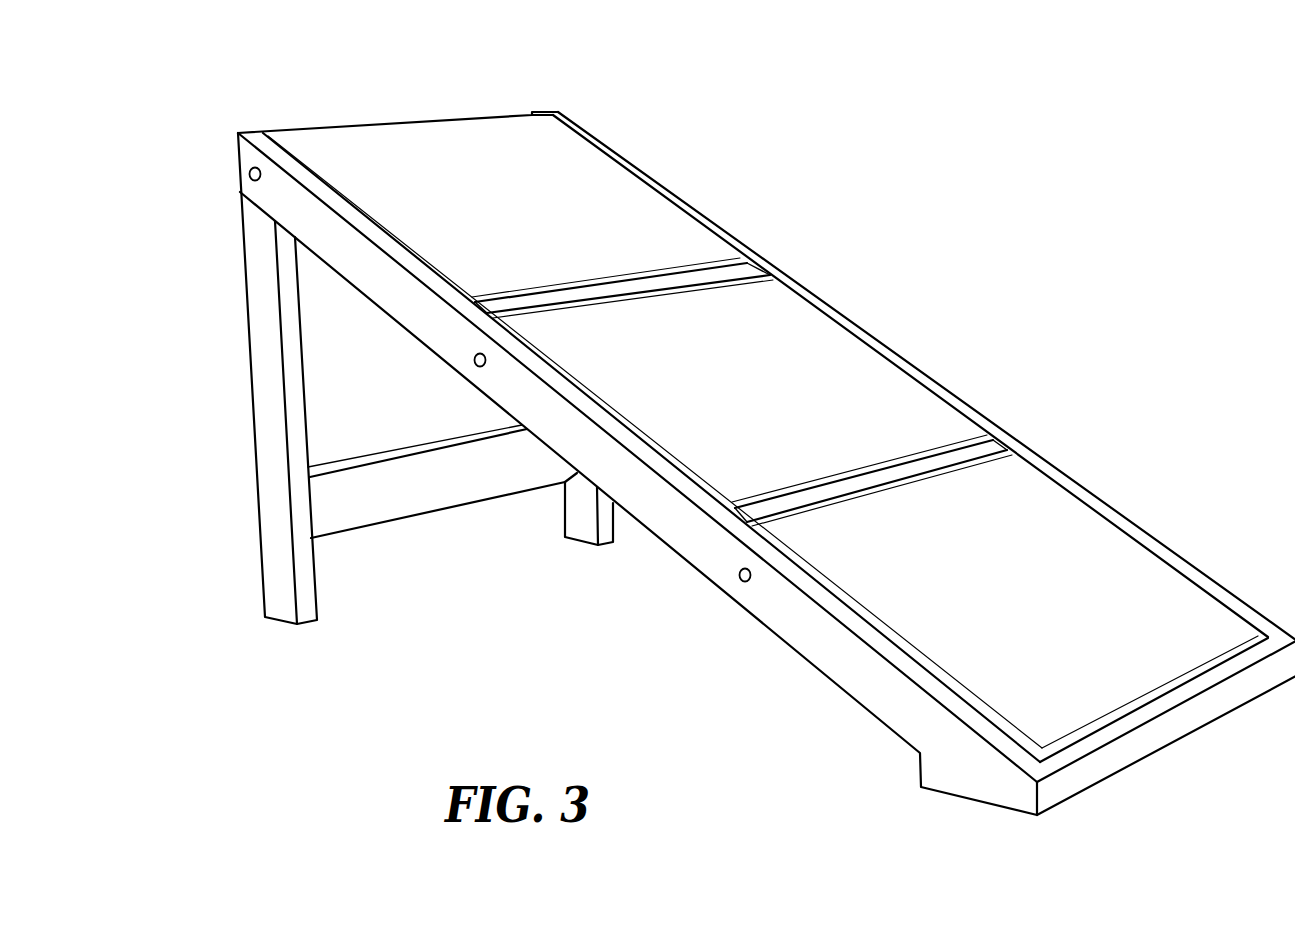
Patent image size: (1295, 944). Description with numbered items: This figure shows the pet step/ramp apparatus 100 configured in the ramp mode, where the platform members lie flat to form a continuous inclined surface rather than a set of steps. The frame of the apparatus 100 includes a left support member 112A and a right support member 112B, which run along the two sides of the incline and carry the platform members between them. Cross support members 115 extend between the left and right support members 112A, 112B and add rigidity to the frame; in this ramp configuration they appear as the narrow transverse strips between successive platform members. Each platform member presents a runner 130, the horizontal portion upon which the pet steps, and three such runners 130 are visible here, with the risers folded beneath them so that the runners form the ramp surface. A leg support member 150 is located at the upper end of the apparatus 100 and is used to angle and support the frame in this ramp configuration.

The pet step/ramp apparatus 100 is at (262, 80).
The left support member 112A is at (880, 643).
The right support member 112B is at (1183, 563).
The cross support members 115 is at (703, 270).
The runner 130 is at (522, 182).
The leg support member 150 is at (268, 443).